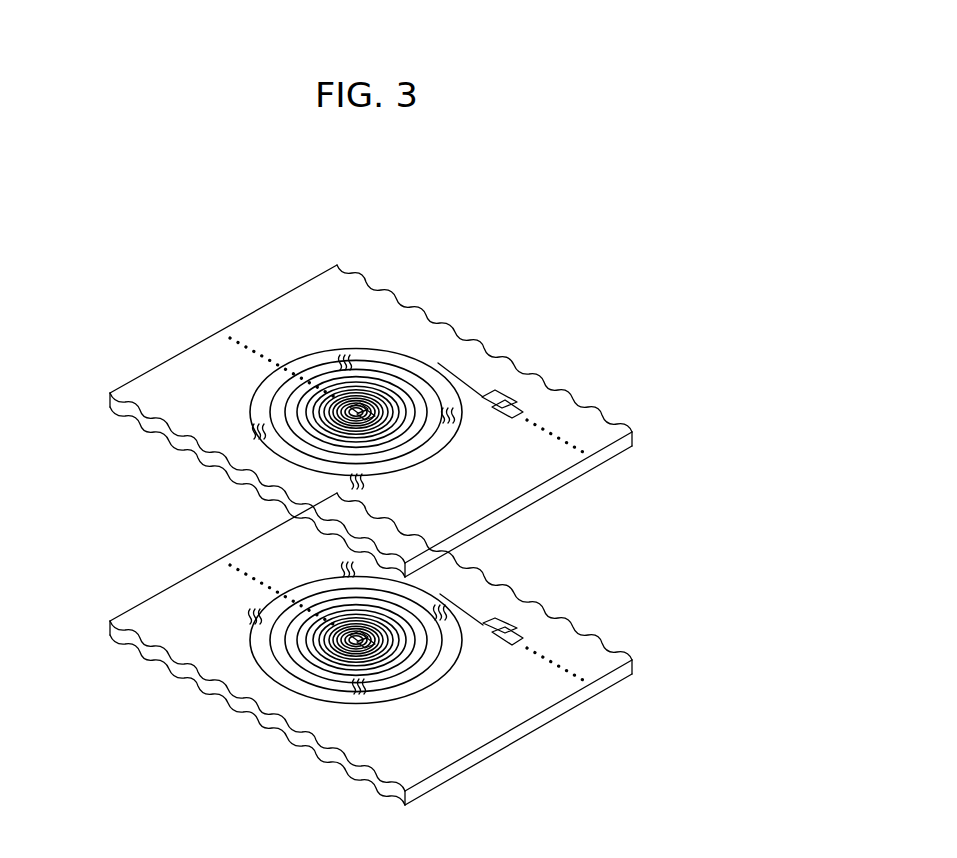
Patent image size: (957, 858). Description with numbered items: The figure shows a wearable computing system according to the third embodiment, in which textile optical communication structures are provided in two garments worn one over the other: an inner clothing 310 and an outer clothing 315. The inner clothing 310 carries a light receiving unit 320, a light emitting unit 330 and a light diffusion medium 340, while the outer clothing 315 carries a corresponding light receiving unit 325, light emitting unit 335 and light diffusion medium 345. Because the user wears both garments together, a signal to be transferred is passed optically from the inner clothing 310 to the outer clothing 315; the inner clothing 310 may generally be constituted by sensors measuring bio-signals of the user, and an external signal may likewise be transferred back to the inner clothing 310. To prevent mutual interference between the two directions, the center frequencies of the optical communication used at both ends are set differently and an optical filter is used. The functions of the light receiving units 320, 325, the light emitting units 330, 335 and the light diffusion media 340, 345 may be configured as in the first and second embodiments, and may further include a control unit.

The inner clothing 310 is at (190, 367).
The outer clothing 315 is at (162, 608).
The light receiving unit 320 is at (357, 405).
The light receiving unit 325 is at (355, 638).
The light emitting unit 330 is at (505, 395).
The light emitting unit 335 is at (507, 628).
The light diffusion medium 340 is at (438, 363).
The light diffusion medium 345 is at (432, 682).